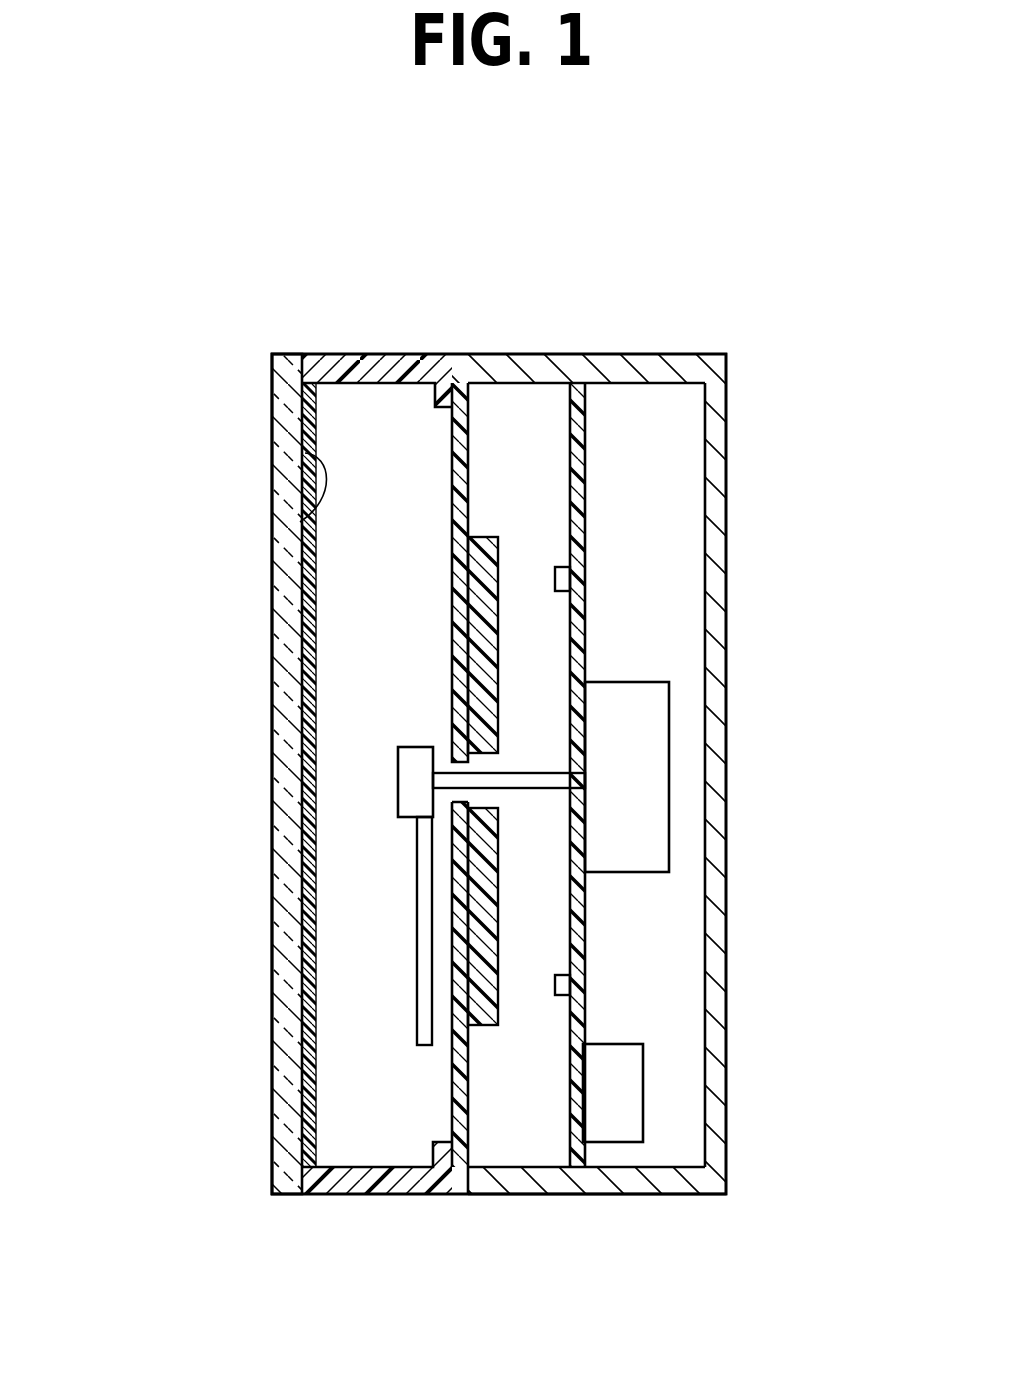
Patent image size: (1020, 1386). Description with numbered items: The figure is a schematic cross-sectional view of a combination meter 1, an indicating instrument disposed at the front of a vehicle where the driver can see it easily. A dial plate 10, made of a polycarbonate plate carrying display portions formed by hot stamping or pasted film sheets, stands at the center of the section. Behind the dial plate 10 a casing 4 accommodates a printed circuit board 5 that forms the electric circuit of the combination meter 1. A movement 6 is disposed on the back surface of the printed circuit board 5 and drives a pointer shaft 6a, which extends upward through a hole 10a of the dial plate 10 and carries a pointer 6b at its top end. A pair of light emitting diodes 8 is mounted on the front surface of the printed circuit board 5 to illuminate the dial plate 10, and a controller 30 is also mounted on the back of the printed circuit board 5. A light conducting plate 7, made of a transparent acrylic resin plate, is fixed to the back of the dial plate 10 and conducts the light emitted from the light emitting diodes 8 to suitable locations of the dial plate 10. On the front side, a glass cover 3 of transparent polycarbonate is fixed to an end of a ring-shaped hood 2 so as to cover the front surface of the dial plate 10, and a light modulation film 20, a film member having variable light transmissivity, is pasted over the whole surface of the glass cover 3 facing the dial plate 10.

The combination meter 1 is at (100, 303).
The ring-shaped hood 2 is at (368, 1194).
The glass cover 3 is at (272, 410).
The casing 4 is at (640, 1194).
The printed circuit board 5 is at (585, 926).
The movement 6 is at (488, 863).
The pointer shaft 6a is at (520, 790).
The pointer 6b is at (417, 892).
The light conducting plate 7 is at (500, 912).
The light emitting diodes 8 is at (568, 572).
The dial plate 10 is at (438, 597).
The hole 10a is at (463, 758).
The light modulation film 20 is at (302, 517).
The controller 30 is at (643, 1095).